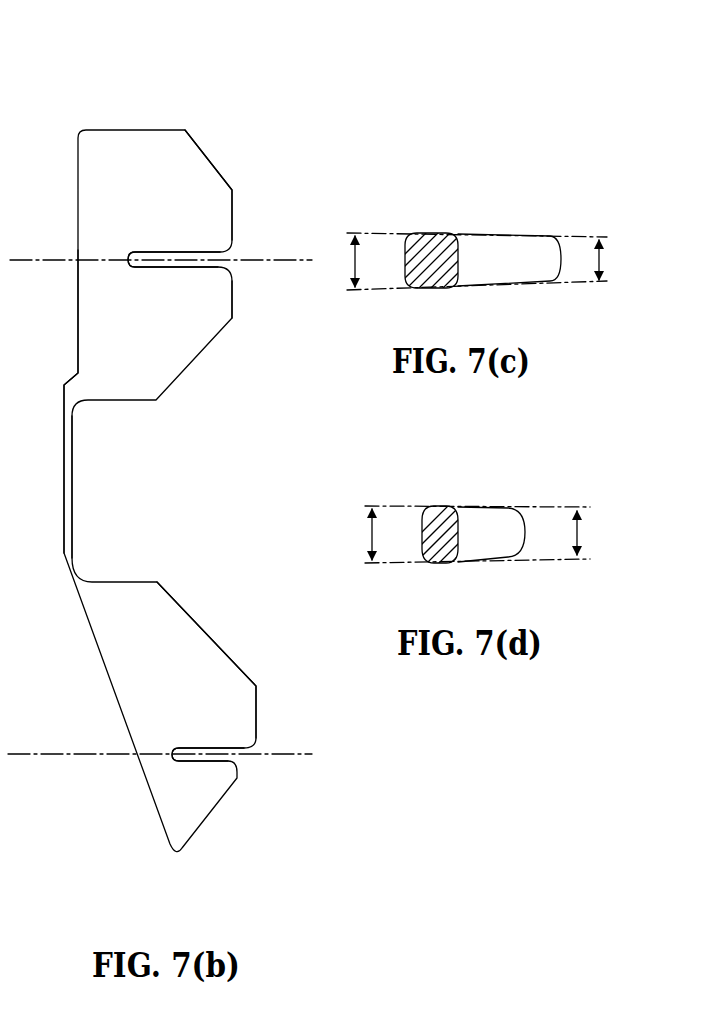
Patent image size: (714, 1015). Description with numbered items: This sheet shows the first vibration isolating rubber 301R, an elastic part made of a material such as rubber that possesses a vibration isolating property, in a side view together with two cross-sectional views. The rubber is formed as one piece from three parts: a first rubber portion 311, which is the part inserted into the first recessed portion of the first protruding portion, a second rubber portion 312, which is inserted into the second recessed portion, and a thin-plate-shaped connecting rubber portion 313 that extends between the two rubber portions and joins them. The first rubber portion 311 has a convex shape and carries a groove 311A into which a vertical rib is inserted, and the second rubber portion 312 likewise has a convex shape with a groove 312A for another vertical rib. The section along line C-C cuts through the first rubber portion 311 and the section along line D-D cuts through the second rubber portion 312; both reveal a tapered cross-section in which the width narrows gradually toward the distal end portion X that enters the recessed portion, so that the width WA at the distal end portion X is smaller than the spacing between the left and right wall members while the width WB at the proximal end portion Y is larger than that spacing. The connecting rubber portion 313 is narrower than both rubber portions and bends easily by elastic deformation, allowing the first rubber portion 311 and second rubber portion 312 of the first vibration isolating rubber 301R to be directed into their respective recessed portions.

In FIG. 7B, the first vibration isolating rubber 301R is at (160, 102).
In FIG. 7C, the first vibration isolating rubber 301R is at (485, 230).
In FIG. 7D, the first vibration isolating rubber 301R is at (505, 506).
In FIG. 7B, the first rubber portion 311 is at (185, 145).
In FIG. 7C, the first rubber portion 311 is at (505, 277).
In FIG. 7B, the groove 311A is at (218, 257).
In FIG. 7B, the second rubber portion 312 is at (193, 630).
In FIG. 7D, the second rubber portion 312 is at (490, 553).
In FIG. 7B, the groove 312A is at (217, 757).
In FIG. 7B, the connecting rubber portion 313 is at (73, 481).
In FIG. 7B, the distal end portion X is at (232, 295).
In FIG. 7C, the distal end portion X is at (560, 258).
In FIG. 7D, the distal end portion X is at (526, 531).
In FIG. 7B, the proximal end portion Y is at (78, 300).
In FIG. 7C, the proximal end portion Y is at (406, 250).
In FIG. 7D, the proximal end portion Y is at (422, 526).
In FIG. 7B, the line C- C is at (19, 258).
In FIG. 7B, the line D- D is at (16, 752).
In FIG. 7C, the width of the distal end portion WA is at (618, 260).
In FIG. 7D, the width of the distal end portion WA is at (597, 533).
In FIG. 7C, the width of the proximal end portion WB is at (373, 261).
In FIG. 7D, the width of the proximal end portion WB is at (390, 534).